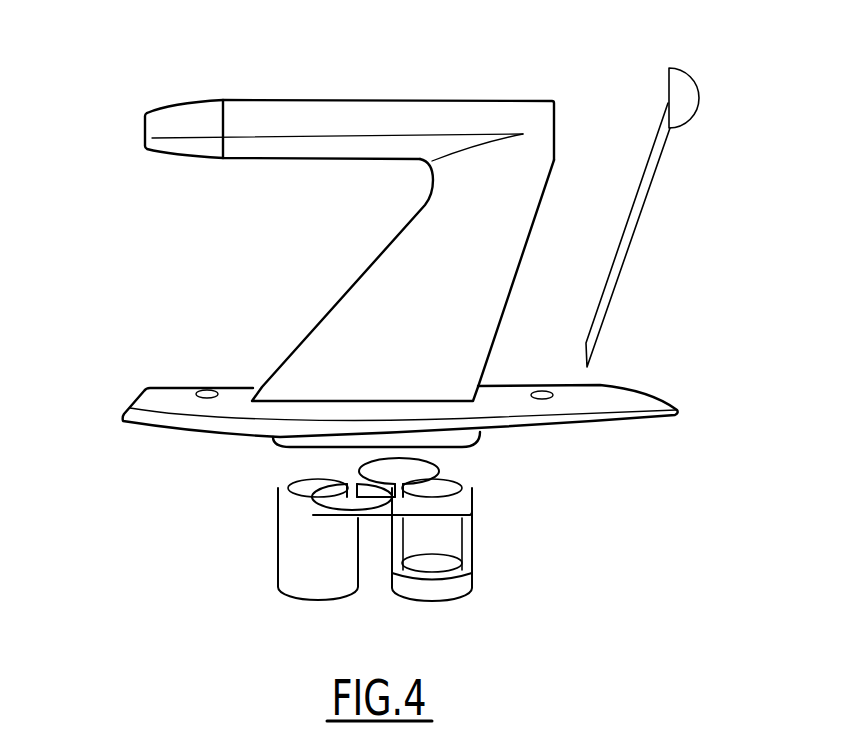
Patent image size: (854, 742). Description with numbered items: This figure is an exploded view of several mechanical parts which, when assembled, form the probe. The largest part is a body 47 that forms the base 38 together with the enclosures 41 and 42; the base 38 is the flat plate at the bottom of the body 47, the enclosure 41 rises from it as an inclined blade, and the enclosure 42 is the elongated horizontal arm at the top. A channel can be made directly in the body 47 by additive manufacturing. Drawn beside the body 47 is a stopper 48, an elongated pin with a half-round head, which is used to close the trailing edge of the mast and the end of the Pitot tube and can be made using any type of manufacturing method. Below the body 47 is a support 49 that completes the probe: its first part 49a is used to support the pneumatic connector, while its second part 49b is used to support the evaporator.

The body 47 is at (118, 232).
The enclosure 42 is at (255, 99).
The enclosure 41 is at (349, 291).
The base 38 is at (172, 388).
The stopper 48 is at (627, 252).
The support 49 is at (206, 540).
The first part 49a is at (293, 565).
The second part 49b is at (475, 542).